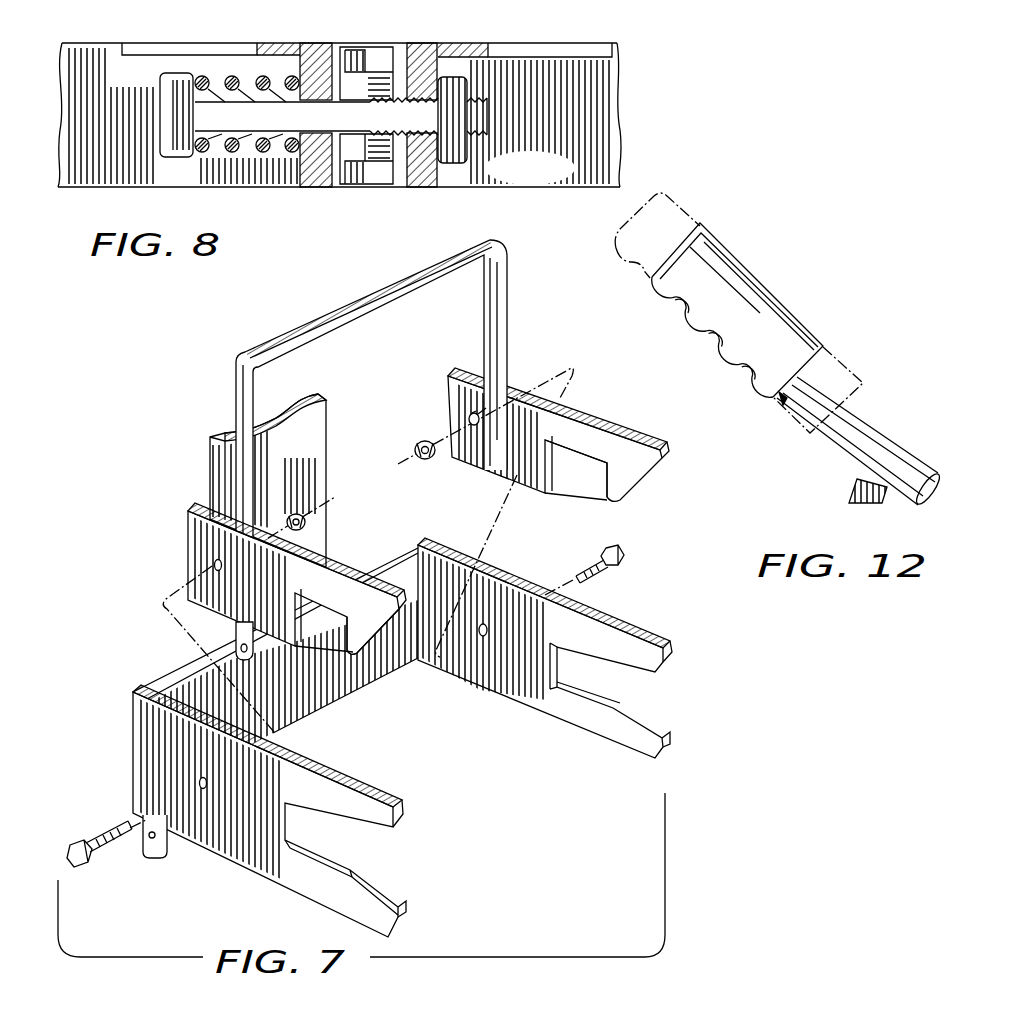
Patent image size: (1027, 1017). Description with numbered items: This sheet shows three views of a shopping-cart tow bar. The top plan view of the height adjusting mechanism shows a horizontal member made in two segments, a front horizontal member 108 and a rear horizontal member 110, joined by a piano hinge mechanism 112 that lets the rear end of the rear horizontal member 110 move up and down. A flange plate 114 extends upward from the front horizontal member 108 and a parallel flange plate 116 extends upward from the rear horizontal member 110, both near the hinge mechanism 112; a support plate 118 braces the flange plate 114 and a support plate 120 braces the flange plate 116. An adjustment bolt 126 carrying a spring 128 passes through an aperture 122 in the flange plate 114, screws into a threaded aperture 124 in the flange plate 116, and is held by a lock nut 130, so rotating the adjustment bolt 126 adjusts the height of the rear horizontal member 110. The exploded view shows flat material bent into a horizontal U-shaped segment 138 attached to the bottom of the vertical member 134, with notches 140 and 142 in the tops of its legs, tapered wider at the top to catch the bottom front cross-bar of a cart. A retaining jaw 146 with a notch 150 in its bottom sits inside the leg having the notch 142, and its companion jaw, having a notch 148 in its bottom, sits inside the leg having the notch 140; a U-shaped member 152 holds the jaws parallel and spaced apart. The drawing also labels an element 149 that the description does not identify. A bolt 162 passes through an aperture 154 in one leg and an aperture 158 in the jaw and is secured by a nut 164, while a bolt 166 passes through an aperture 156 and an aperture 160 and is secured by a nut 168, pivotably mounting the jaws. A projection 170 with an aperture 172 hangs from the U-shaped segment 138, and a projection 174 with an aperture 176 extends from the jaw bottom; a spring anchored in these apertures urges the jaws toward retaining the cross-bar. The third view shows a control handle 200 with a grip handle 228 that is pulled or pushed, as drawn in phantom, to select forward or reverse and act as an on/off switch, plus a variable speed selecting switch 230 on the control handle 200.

In FIG. 8, the front horizontal member 108 is at (87, 170).
In FIG. 8, the rear horizontal member 110 is at (512, 180).
In FIG. 8, the piano hinge mechanism 112 is at (367, 180).
In FIG. 8, the flange plate 114 is at (306, 53).
In FIG. 8, the flange plate 116 is at (415, 53).
In FIG. 8, the support plate 118 is at (189, 52).
In FIG. 8, the support plate 120 is at (521, 53).
In FIG. 8, the aperture 122 is at (312, 132).
In FIG. 8, the threaded aperture 124 is at (428, 133).
In FIG. 8, the adjustment bolt 126 is at (168, 158).
In FIG. 8, the spring 128 is at (235, 152).
In FIG. 8, the lock nut 130 is at (470, 83).
In FIG. 7, the vertical member 134 is at (312, 427).
In FIG. 7, the U-shaped segment 138 is at (118, 752).
In FIG. 7, the notch 140 is at (343, 861).
In FIG. 7, the notch 142 is at (605, 708).
In FIG. 7, the retaining jaw 146 is at (572, 432).
In FIG. 7, the notch 148 is at (310, 638).
In FIG. 7, the notched plate 149 is at (187, 528).
In FIG. 7, the notch 150 is at (553, 480).
In FIG. 7, the U-shaped member 152 is at (281, 343).
In FIG. 7, the aperture 154 is at (205, 790).
In FIG. 7, the aperture 156 is at (480, 634).
In FIG. 7, the aperture 158 is at (212, 565).
In FIG. 7, the aperture 160 is at (468, 417).
In FIG. 7, the bolt 162 is at (85, 866).
In FIG. 7, the nut 164 is at (308, 520).
In FIG. 7, the bolt 166 is at (618, 548).
In FIG. 7, the nut 168 is at (428, 461).
In FIG. 7, the projection 170 is at (162, 852).
In FIG. 7, the aperture 172 is at (150, 843).
In FIG. 7, the projection 174 is at (249, 654).
In FIG. 7, the aperture 176 is at (241, 664).
In FIG. 12, the control handle 200 is at (883, 437).
In FIG. 12, the grip handle 228 is at (714, 350).
In FIG. 12, the variable speed selecting switch 230 is at (863, 481).